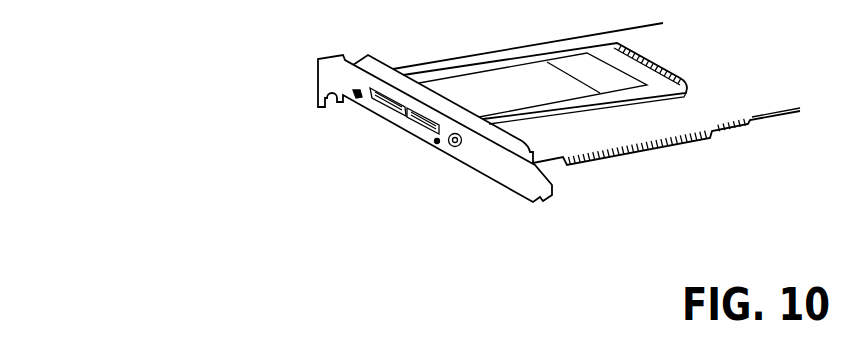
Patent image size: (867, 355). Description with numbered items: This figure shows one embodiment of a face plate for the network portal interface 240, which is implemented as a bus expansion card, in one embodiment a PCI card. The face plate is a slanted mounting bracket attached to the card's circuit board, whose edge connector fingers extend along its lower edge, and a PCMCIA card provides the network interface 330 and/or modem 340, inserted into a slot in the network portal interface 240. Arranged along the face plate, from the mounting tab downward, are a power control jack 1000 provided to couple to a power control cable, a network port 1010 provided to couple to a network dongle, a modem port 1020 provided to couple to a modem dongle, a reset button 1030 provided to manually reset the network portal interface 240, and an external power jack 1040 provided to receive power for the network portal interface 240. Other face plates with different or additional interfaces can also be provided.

The network portal interface 240 is at (418, 148).
The network interface 330 is at (540, 73).
The modem 340 is at (547, 98).
The power control jack 1000 is at (356, 104).
The network port 1010 is at (388, 112).
The modem port 1020 is at (421, 136).
The reset button 1030 is at (437, 148).
The external power jack 1040 is at (457, 152).